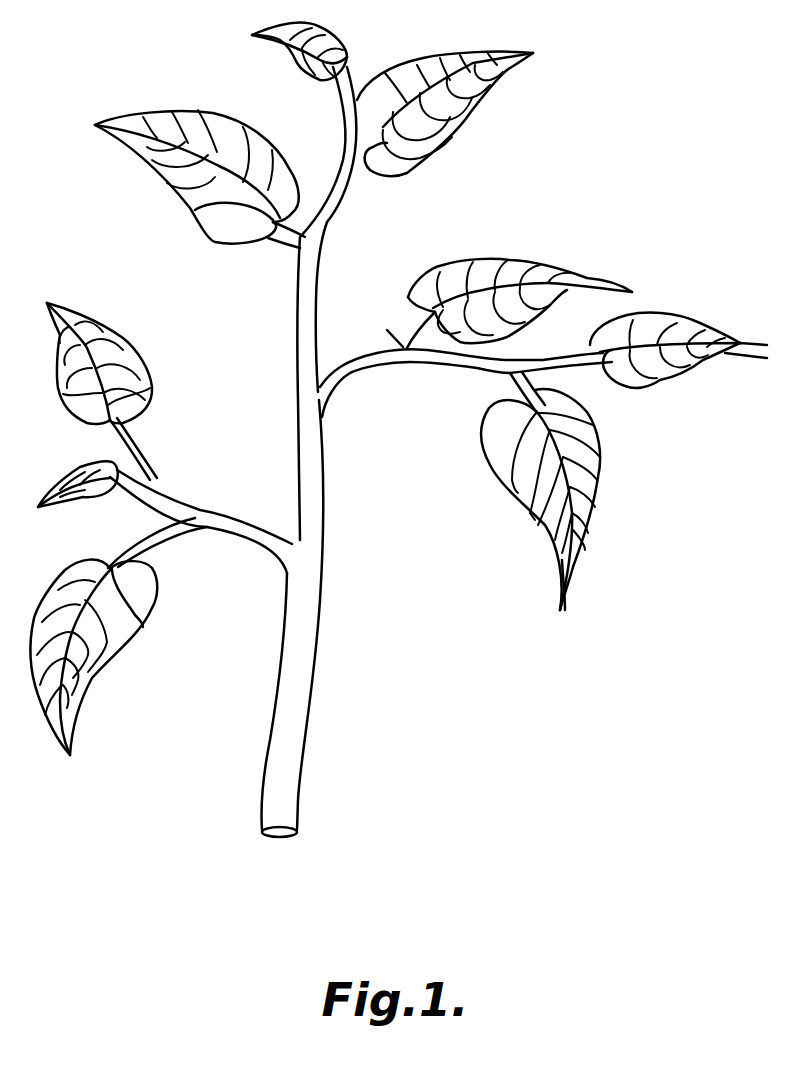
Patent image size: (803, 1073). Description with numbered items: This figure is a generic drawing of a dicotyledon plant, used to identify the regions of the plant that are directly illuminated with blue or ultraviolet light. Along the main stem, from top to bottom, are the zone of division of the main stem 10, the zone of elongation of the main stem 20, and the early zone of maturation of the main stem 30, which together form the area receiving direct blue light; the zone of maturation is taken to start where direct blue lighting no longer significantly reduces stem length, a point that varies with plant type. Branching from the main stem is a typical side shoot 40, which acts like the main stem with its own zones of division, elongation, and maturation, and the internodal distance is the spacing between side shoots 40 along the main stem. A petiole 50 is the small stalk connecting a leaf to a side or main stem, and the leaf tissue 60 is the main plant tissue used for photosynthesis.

The zone of division of the main stem 10 is at (318, 160).
The zone of elongation of the main stem 20 is at (325, 340).
The early zone of maturation of the main stem 30 is at (312, 768).
The side shoot 40 is at (477, 379).
The petiole 50 is at (167, 535).
The leaf tissue 60 is at (112, 637).